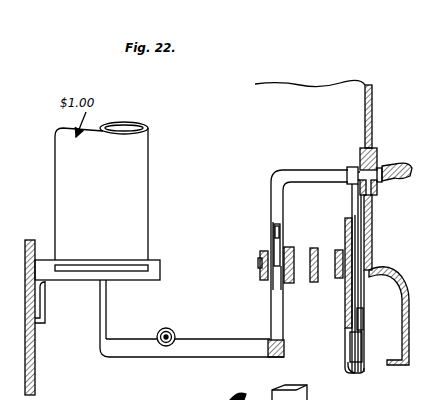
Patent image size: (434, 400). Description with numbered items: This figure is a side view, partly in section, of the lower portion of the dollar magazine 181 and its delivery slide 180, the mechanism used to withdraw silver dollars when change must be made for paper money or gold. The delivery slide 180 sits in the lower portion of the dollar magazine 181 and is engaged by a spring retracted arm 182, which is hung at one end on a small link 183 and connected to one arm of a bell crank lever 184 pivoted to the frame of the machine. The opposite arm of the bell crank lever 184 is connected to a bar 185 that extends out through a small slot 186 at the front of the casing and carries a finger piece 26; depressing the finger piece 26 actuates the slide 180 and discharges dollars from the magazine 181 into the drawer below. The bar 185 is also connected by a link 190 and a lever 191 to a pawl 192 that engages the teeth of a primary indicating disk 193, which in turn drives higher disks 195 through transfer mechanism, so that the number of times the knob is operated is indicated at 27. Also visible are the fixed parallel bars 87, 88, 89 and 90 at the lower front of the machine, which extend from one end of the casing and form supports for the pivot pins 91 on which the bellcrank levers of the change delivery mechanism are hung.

The finger piece 26 is at (399, 169).
The indicator 27 is at (372, 240).
The fixed parallel bar 87 is at (262, 280).
The fixed parallel bar 88 is at (288, 283).
The fixed parallel bar 89 is at (321, 244).
The fixed parallel bar 90 is at (340, 280).
The pivot pin 91 is at (260, 262).
The delivery slide 180 is at (135, 268).
The dollar magazine 181 is at (147, 206).
The spring retracted arm 182 is at (106, 317).
The link 183 is at (203, 349).
The bell crank lever 184 is at (279, 310).
The bar 185 is at (304, 174).
The slot 186 is at (369, 208).
The link 190 is at (352, 204).
The lever 191 is at (355, 372).
The pawl 192 is at (359, 341).
The primary indicating disk 193 is at (359, 284).
The higher disks 195 is at (359, 323).